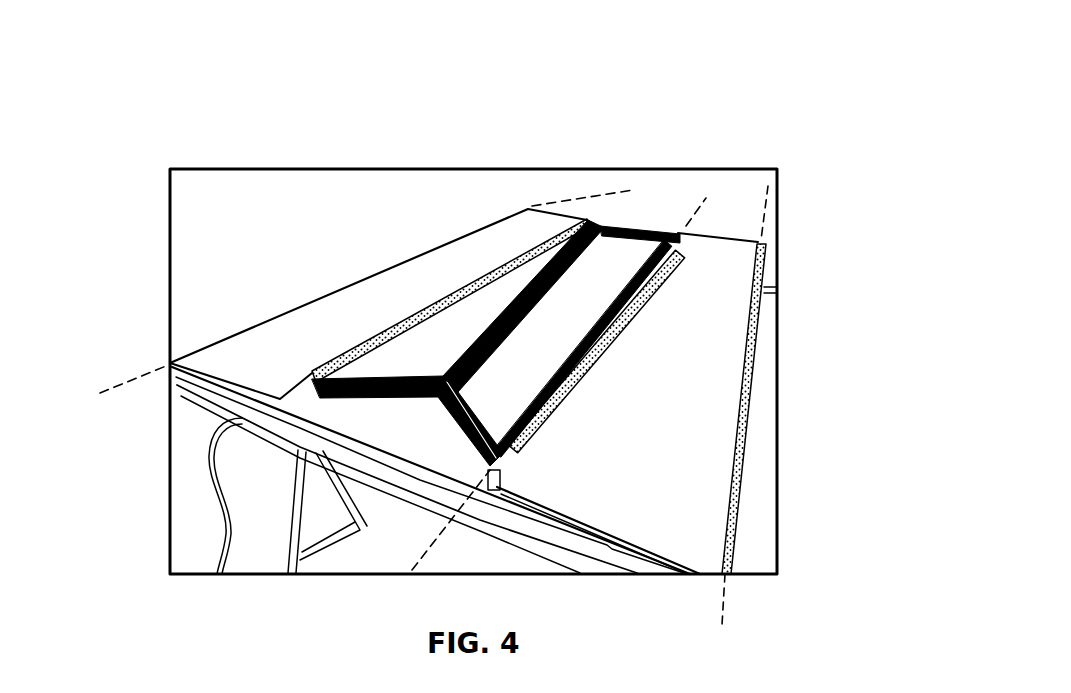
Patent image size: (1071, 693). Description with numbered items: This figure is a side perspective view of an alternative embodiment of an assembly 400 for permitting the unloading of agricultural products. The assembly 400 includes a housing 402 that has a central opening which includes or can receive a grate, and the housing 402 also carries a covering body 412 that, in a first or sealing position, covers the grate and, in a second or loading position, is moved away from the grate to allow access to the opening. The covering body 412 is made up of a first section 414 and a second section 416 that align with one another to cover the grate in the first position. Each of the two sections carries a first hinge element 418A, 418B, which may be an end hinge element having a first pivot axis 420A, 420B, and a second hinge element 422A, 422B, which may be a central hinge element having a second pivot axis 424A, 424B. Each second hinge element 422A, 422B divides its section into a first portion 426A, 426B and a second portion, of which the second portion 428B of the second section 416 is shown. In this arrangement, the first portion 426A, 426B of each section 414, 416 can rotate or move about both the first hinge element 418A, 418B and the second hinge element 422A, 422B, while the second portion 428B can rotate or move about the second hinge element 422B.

The assembly 400 is at (655, 88).
The housing 402 is at (172, 368).
The covering body 412 is at (491, 115).
The first section 414 is at (380, 290).
The second section 416 is at (742, 264).
The first hinge element 418A is at (172, 362).
The first hinge element 418B is at (728, 547).
The first pivot axis 420A is at (127, 387).
The first pivot axis 420B is at (744, 422).
The second hinge element 422A is at (456, 296).
The second hinge element 422B is at (624, 320).
The second pivot axis 424A is at (524, 258).
The second pivot axis 424B is at (640, 292).
The first portion 426A is at (345, 351).
The first portion 426B is at (693, 445).
The second portion 428B is at (737, 523).